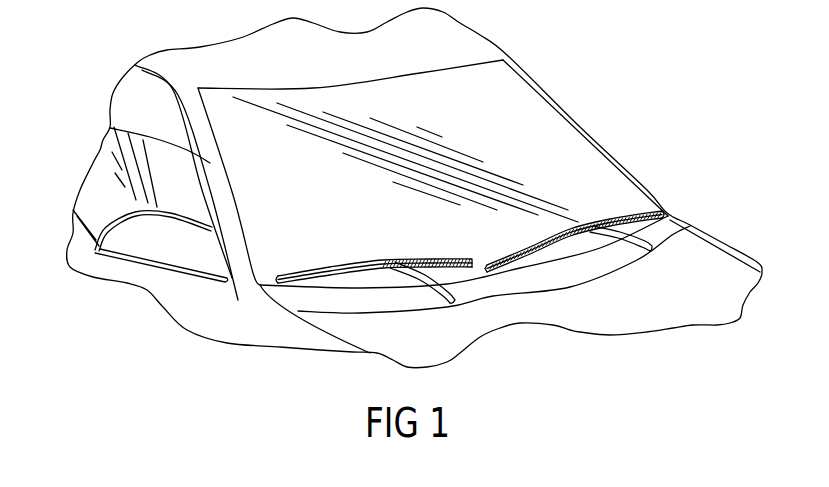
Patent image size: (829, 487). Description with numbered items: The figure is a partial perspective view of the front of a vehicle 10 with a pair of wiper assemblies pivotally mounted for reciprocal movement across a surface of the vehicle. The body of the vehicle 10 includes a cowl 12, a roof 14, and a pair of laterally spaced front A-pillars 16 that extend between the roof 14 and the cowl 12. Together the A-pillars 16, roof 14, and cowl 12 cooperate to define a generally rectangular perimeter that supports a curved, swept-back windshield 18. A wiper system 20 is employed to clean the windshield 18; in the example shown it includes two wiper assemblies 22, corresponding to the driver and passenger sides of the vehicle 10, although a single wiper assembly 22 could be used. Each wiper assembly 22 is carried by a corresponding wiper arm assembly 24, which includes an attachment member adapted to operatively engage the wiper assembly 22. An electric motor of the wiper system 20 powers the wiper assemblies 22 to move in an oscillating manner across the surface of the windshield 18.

The vehicle 10 is at (105, 68).
The cowl 12 is at (677, 233).
The roof 14 is at (479, 44).
The A-pillar 16 is at (112, 128).
The windshield 18 is at (550, 117).
The wiper system 20 is at (572, 330).
The wiper assembly 22 is at (340, 262).
The wiper arm assembly 24 is at (427, 290).